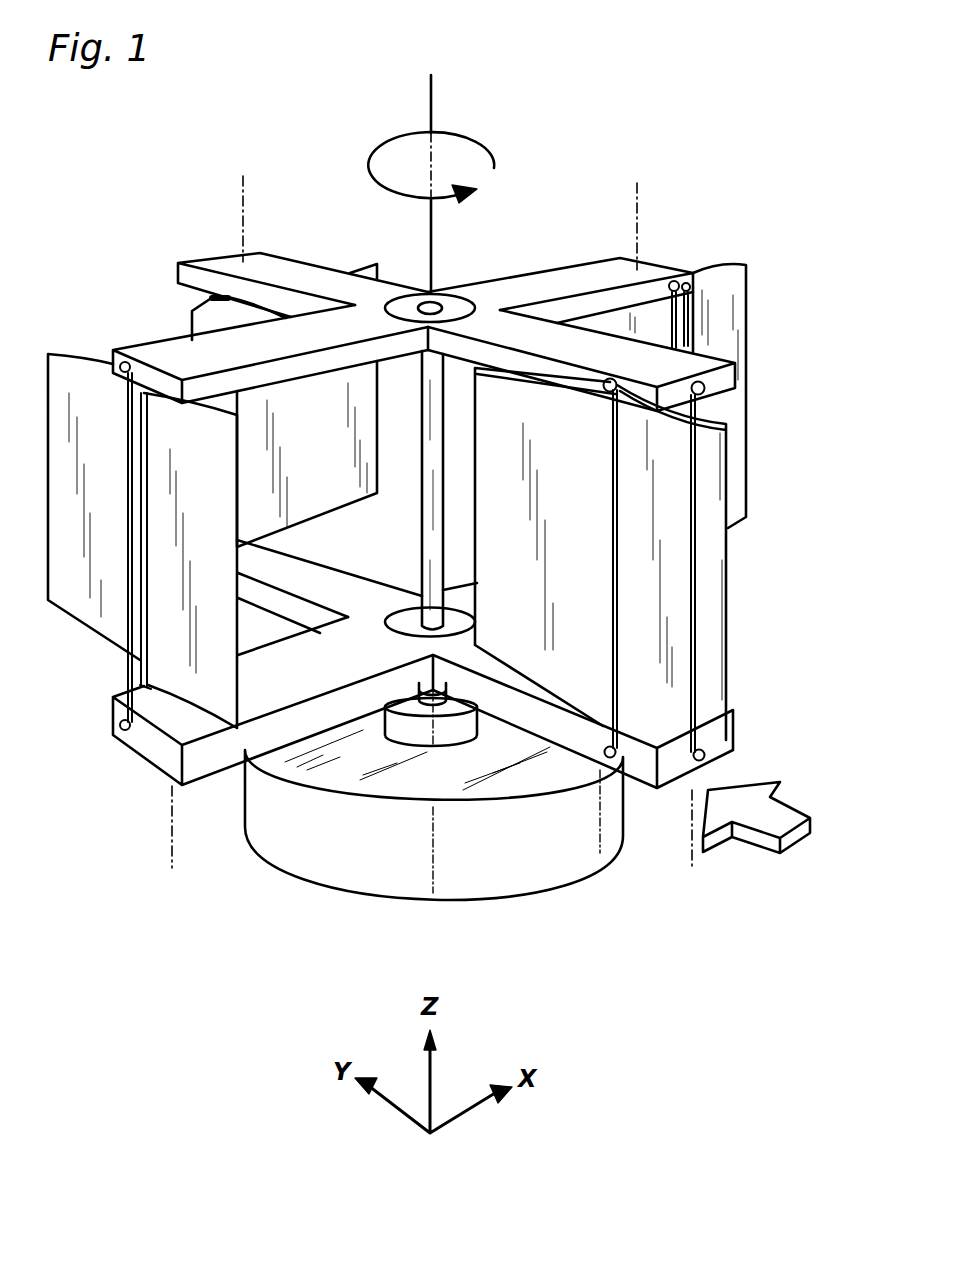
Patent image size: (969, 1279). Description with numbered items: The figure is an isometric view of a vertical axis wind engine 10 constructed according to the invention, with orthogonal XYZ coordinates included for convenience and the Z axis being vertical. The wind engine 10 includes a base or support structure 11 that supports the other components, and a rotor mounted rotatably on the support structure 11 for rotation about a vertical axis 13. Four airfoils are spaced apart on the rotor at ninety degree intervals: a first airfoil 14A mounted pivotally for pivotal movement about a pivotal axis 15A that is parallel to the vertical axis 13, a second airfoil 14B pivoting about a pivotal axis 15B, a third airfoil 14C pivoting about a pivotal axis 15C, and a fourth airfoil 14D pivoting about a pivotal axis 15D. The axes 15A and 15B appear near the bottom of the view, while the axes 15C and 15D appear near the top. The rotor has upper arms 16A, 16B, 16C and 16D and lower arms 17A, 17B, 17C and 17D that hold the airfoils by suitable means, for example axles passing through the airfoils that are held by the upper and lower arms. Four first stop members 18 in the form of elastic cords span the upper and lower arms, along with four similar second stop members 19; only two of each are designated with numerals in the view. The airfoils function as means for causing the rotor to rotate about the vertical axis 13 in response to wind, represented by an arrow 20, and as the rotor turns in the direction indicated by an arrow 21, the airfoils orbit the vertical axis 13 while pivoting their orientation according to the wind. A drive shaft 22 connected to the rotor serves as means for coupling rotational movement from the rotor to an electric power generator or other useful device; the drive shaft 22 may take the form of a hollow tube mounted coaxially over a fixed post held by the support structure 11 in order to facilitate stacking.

The vertical axis wind engine 10 is at (685, 141).
The support structure 11 is at (492, 853).
The vertical axis 13 is at (428, 93).
The first airfoil 14A is at (77, 357).
The second airfoil 14B is at (707, 420).
The third airfoil 14C is at (750, 265).
The fourth airfoil 14D is at (363, 267).
The pivotal axis 15A is at (172, 874).
The pivotal axis 15B is at (692, 868).
The pivotal axis 15C is at (638, 196).
The pivotal axis 15D is at (243, 187).
The upper arm 16A is at (193, 340).
The upper arm 16B is at (679, 365).
The upper arm 16C is at (612, 267).
The upper arm 16D is at (218, 262).
The lower arm 17A is at (150, 738).
The lower arm 17B is at (723, 754).
The lower arm 17C is at (470, 592).
The lower arm 17D is at (310, 564).
The first stop member 18 is at (128, 634).
The second stop member 19 is at (146, 652).
The arrow 20 is at (758, 840).
The arrow 21 is at (473, 138).
The drive shaft 22 is at (430, 387).